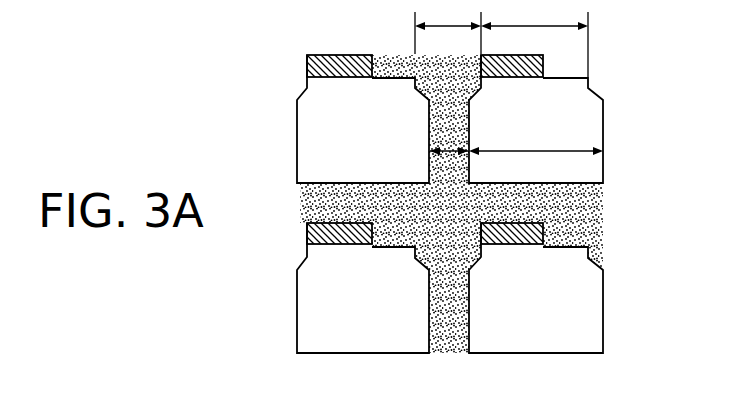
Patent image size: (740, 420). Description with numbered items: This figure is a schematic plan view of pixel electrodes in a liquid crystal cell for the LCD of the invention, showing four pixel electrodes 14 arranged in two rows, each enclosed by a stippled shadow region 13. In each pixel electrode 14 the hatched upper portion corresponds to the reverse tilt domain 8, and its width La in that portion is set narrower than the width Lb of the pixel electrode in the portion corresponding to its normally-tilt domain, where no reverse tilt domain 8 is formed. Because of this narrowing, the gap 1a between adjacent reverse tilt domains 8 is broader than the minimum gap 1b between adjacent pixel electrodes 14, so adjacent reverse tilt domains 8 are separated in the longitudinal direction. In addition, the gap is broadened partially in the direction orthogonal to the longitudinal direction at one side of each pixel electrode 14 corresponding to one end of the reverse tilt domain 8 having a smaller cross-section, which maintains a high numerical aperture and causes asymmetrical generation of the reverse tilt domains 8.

The reverse tilt domain 8 is at (543, 62).
The shadow region 13 is at (558, 219).
The pixel electrode 14 is at (604, 122).
The gap between adjacent reverse tilt domains 1a is at (448, 27).
The minimum gap between adjacent pixel electrodes 1b is at (450, 148).
The width of pixel electrode in reverse tilt domain portion La is at (534, 38).
The width of pixel electrode in normally-tilt domain portion Lb is at (536, 139).